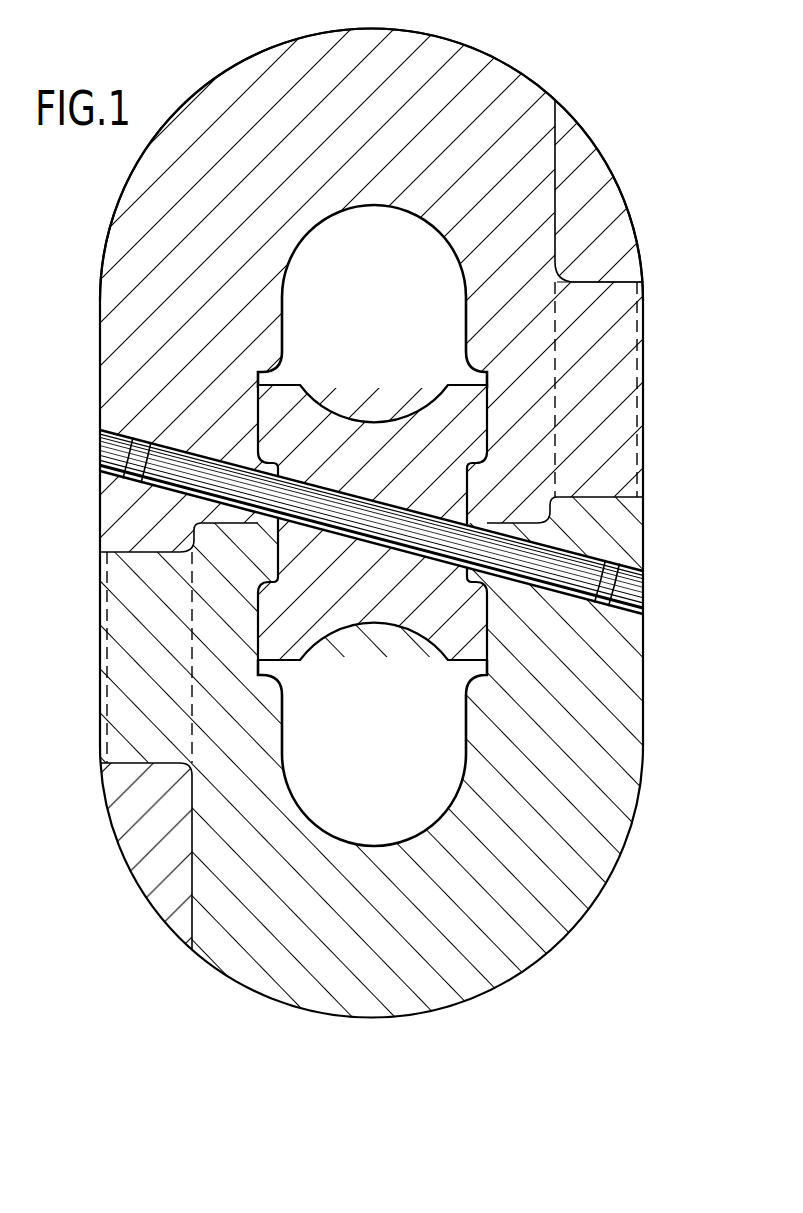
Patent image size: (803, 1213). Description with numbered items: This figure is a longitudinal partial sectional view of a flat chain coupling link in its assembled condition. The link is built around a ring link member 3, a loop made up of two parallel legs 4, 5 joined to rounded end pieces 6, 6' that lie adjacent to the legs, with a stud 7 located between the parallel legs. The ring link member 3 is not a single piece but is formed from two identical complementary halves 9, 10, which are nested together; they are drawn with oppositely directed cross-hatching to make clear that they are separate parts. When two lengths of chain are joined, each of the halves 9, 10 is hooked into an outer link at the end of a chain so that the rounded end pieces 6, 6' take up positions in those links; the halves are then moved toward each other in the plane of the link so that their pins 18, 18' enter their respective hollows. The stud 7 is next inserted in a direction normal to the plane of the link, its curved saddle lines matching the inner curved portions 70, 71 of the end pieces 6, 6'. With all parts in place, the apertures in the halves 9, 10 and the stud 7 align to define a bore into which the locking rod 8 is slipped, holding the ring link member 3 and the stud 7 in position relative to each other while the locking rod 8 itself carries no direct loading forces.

The ring link member 3 is at (114, 846).
The parallel leg 4 is at (96, 497).
The parallel leg 5 is at (651, 556).
The rounded end piece 6 is at (371, 522).
The rounded end piece 6' is at (371, 164).
The stud 7 is at (373, 632).
The locking rod 8 is at (624, 601).
The complementary half 9 is at (605, 721).
The complementary half 10 is at (604, 345).
The pin 18 is at (121, 657).
The pin 18' is at (656, 389).
The inner curved portion 70 is at (357, 845).
The inner curved portion 71 is at (374, 208).